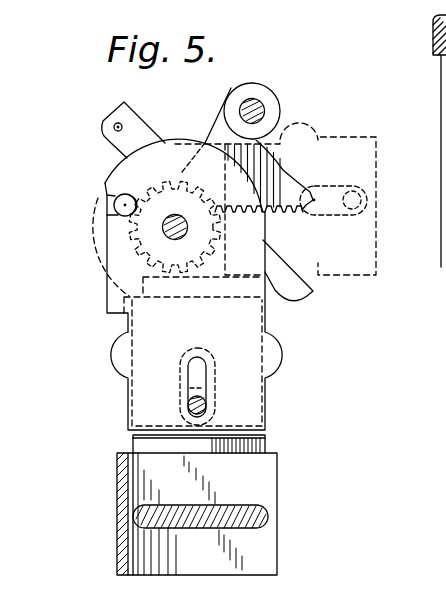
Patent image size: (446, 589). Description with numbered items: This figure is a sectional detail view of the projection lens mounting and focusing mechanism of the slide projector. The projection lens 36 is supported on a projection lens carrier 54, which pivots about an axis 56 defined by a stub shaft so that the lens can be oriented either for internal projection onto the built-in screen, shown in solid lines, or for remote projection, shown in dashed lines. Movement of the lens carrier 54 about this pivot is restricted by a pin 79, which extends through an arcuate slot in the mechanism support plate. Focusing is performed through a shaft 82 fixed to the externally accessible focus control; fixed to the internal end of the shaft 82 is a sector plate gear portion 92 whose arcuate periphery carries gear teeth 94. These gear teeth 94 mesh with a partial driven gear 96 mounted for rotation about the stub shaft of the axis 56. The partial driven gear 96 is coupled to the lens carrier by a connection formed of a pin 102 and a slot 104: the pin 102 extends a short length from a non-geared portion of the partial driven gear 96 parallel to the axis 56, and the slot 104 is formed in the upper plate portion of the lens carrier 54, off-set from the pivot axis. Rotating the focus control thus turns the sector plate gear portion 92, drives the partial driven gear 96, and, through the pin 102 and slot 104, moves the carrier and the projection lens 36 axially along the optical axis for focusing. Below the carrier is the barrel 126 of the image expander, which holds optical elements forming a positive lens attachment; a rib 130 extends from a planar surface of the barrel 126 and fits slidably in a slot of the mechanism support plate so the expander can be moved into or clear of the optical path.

The projection lens 36 is at (349, 277).
The projection lens carrier 54 is at (118, 303).
The axis 56 is at (177, 215).
The pin 79 is at (190, 404).
The shaft 82 is at (262, 101).
The sector plate gear portion 92 is at (279, 178).
The gear teeth 94 is at (275, 210).
The partial driven gear 96 is at (205, 272).
The pin 102 is at (113, 201).
The slot 104 is at (110, 212).
The barrel 126 is at (271, 475).
The rib 130 is at (240, 523).